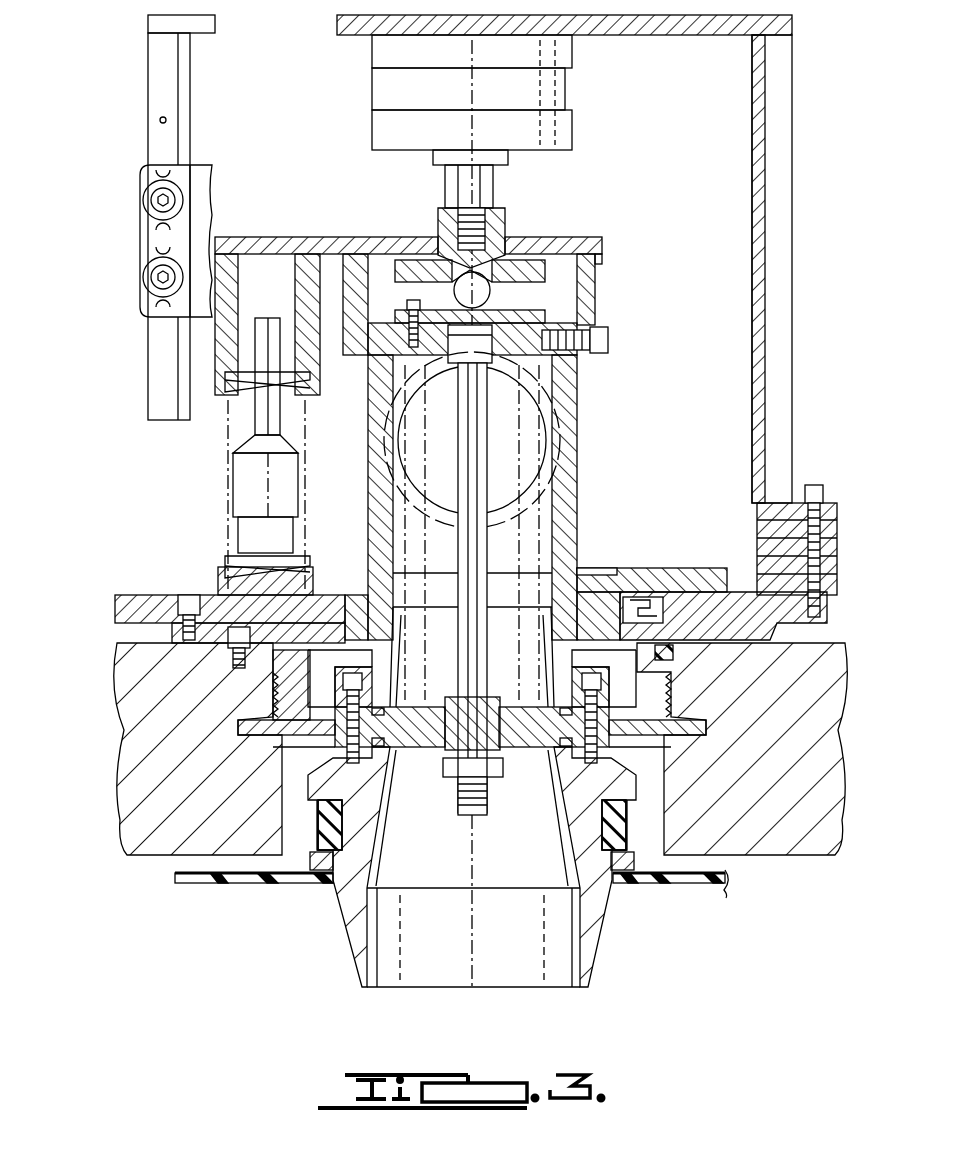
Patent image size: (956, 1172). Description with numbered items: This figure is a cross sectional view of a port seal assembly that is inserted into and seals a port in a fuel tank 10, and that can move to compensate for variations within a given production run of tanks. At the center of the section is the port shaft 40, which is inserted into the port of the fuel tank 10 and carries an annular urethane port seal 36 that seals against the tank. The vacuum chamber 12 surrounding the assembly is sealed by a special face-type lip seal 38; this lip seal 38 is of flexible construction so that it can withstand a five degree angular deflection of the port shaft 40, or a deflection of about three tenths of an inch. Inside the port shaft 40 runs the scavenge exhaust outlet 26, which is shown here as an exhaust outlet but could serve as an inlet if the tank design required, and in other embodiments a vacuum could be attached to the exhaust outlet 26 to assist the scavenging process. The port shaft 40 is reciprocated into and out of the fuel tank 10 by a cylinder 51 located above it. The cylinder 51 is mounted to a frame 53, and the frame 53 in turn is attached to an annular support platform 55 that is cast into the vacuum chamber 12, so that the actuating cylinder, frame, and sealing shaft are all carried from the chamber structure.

The fuel tank 10 is at (200, 885).
The vacuum chamber 12 is at (150, 798).
The scavenge exhaust outlet 26 is at (545, 392).
The annular urethane port seal 36 is at (305, 835).
The face-type lip seal 38 is at (583, 572).
The port shaft 40 is at (577, 446).
The cylinder 51 is at (555, 93).
The frame 53 is at (752, 160).
The annular support platform 55 is at (272, 696).